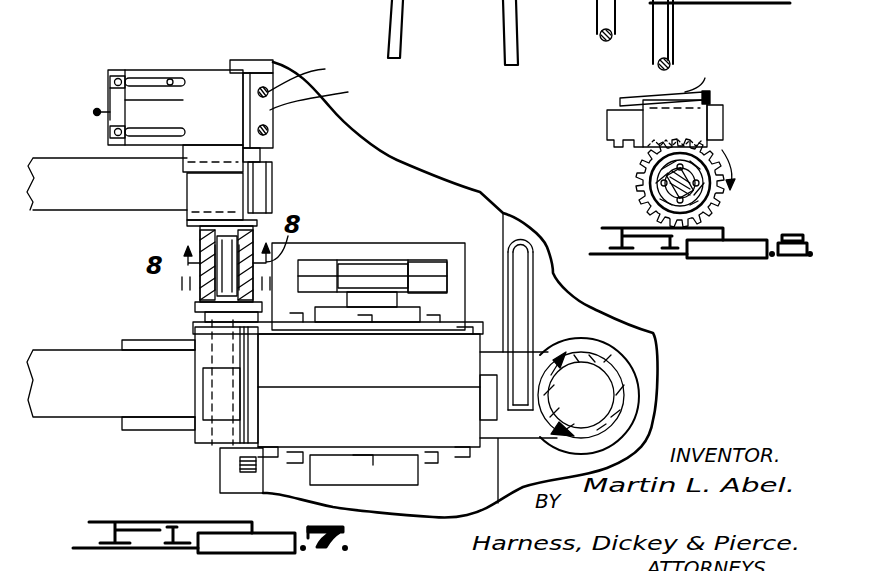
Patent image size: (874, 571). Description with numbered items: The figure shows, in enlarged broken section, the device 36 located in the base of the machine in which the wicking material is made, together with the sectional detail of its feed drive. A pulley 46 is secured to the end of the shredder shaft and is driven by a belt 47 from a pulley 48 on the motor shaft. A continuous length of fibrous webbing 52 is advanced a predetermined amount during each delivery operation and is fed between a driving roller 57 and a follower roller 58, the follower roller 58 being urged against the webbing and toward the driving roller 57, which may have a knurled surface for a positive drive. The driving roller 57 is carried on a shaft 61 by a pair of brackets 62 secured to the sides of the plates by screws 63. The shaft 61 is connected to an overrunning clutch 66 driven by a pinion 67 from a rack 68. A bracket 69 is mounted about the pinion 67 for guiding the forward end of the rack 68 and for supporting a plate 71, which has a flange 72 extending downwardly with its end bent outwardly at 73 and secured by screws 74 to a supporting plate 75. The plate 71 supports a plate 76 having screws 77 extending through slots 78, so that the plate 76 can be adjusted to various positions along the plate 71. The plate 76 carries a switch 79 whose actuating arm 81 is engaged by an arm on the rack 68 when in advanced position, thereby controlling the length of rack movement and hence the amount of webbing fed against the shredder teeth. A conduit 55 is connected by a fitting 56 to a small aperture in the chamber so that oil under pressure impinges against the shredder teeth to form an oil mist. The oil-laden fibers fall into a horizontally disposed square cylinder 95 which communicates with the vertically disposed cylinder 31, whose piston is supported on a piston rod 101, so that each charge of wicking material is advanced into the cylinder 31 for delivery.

In FIG. 7, the cylinder 31 is at (616, 385).
In FIG. 7, the device 36 is at (407, 418).
In FIG. 7, the pulley 46 is at (368, 262).
In FIG. 7, the belt 47 is at (500, 22).
In FIG. 7, the pulley 48 is at (432, 260).
In FIG. 7, the fibrous webbing 52 is at (50, 408).
In FIG. 7, the conduit 55 is at (523, 302).
In FIG. 7, the fitting 56 is at (480, 385).
In FIG. 7, the driving roller 57 is at (200, 326).
In FIG. 7, the follower roller 58 is at (200, 388).
In FIG. 7, the shaft 61 is at (232, 248).
In FIG. 8, the shaft 61 is at (660, 184).
In FIG. 7, the brackets 62 is at (218, 455).
In FIG. 7, the screws 63 is at (280, 325).
In FIG. 7, the overrunning clutch 66 is at (200, 240).
In FIG. 8, the overrunning clutch 66 is at (700, 179).
In FIG. 8, the pinion 67 is at (715, 207).
In FIG. 7, the rack 68 is at (47, 200).
In FIG. 8, the rack 68 is at (612, 128).
In FIG. 8, the bracket 69 is at (695, 127).
In FIG. 7, the plate 71 is at (205, 82).
In FIG. 8, the plate 71 is at (703, 68).
In FIG. 7, the flange 72 is at (251, 86).
In FIG. 8, the flange 72 is at (712, 96).
In FIG. 7, the bent end 73 is at (322, 98).
In FIG. 7, the screws 74 is at (310, 74).
In FIG. 7, the supporting plate 75 is at (330, 4).
In FIG. 7, the plate 76 is at (115, 70).
In FIG. 7, the screws 77 is at (126, 78).
In FIG. 7, the slots 78 is at (172, 80).
In FIG. 7, the switch 79 is at (120, 102).
In FIG. 7, the actuating arm 81 is at (100, 113).
In FIG. 7, the square cylinder 95 is at (150, 430).
In FIG. 7, the piston rod 101 is at (652, 48).